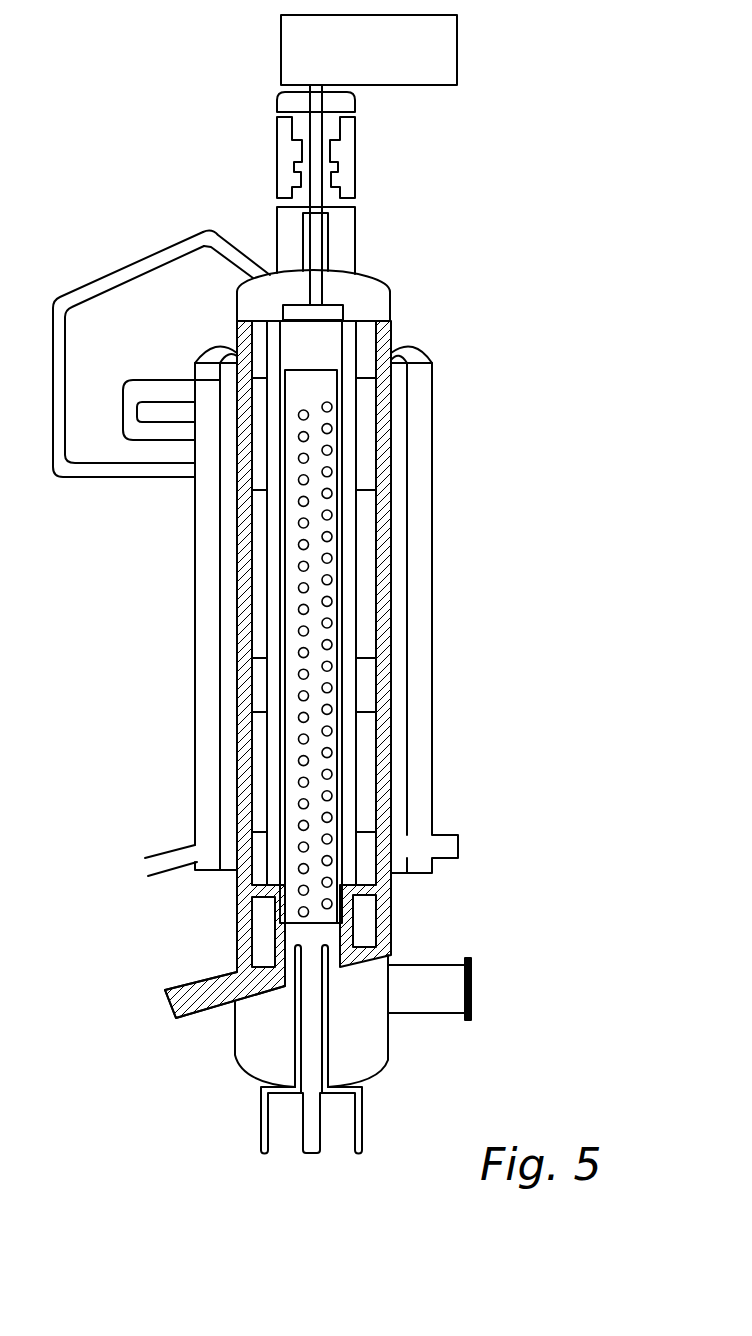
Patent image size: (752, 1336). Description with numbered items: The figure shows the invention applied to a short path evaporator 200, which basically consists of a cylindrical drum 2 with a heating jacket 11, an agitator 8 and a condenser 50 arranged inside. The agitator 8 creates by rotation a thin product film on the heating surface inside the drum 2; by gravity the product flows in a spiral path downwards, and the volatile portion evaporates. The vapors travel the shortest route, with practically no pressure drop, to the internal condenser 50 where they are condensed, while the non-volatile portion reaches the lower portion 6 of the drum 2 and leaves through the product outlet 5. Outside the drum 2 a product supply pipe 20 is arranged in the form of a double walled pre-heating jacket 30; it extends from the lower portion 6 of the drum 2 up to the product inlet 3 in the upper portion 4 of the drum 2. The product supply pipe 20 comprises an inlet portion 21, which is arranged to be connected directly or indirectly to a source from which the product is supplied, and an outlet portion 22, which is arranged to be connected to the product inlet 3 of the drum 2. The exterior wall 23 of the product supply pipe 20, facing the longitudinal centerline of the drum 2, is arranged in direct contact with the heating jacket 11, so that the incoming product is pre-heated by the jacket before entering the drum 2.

The cylindrical drum 2 is at (391, 316).
The product inlet 3 is at (245, 257).
The upper portion 4 is at (368, 279).
The product outlet 5 is at (210, 990).
The lower portion 6 is at (236, 896).
The agitator 8 is at (370, 445).
The heating jacket 11 is at (398, 568).
The product supply pipe 20 is at (197, 632).
The inlet portion 21 is at (163, 875).
The outlet portion 22 is at (118, 278).
The exterior wall 23 is at (220, 686).
The double walled pre-heating jacket 30 is at (195, 577).
The condenser 50 is at (327, 730).
The short path evaporator 200 is at (566, 736).